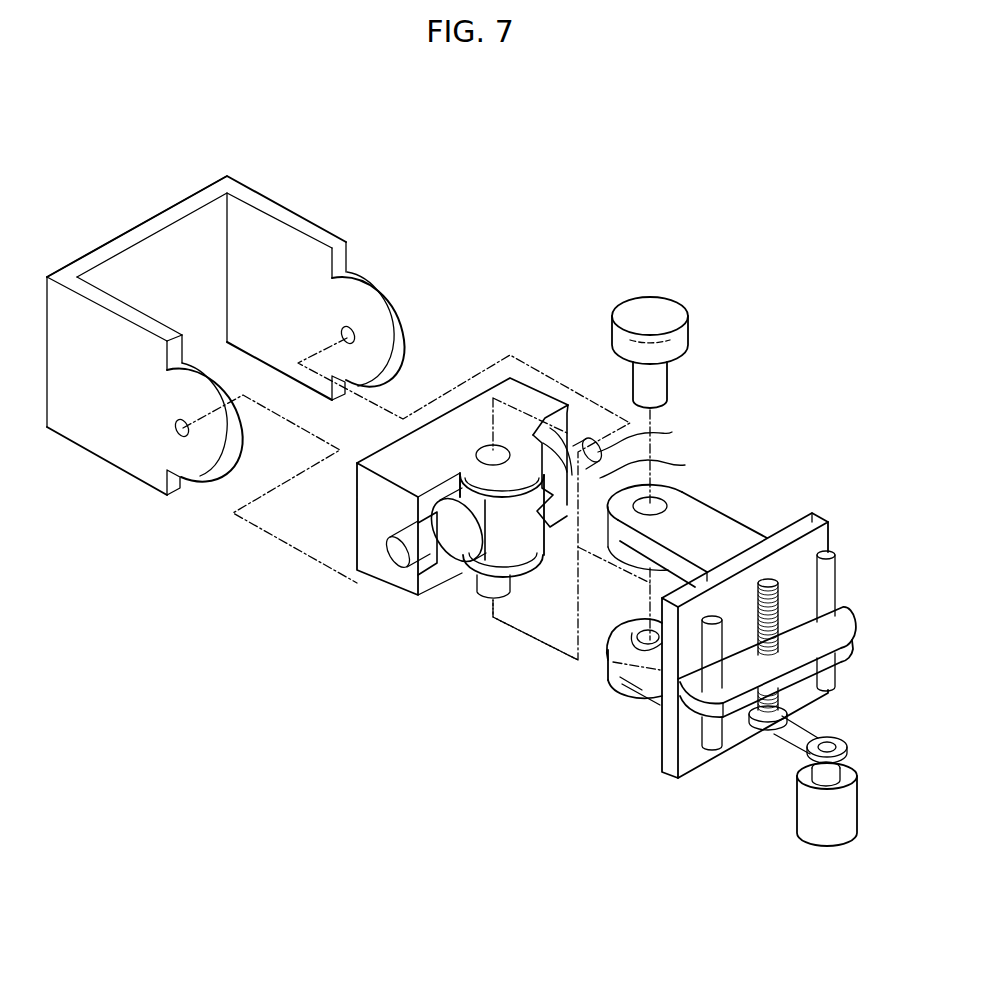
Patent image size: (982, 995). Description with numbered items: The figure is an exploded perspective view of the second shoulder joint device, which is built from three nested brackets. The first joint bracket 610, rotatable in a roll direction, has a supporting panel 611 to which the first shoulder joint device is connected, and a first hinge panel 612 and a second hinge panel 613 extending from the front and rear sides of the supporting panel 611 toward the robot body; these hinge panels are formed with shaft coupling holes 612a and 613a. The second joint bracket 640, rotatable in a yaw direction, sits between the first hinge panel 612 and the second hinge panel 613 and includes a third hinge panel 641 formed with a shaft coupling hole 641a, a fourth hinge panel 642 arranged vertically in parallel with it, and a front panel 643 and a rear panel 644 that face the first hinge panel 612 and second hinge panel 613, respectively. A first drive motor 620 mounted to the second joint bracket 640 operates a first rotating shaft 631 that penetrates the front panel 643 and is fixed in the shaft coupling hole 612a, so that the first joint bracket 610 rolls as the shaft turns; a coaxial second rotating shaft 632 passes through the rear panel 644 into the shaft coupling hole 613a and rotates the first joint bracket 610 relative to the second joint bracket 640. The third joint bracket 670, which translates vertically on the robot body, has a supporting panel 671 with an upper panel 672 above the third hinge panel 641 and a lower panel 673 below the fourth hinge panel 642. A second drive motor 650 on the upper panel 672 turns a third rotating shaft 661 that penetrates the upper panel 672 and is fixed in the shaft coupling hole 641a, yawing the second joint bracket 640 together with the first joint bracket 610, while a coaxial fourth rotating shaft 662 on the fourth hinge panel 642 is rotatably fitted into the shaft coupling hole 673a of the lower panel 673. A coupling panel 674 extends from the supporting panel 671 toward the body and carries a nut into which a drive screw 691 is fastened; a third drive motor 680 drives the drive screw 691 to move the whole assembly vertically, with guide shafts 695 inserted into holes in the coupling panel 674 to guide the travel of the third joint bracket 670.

The first joint bracket 610 is at (128, 195).
The supporting panel 611 is at (100, 253).
The first hinge panel 612 is at (110, 440).
The shaft coupling hole 612a is at (176, 429).
The second hinge panel 613 is at (360, 284).
The shaft coupling hole 613a is at (351, 342).
The first drive motor 620 is at (452, 576).
The first rotating shaft 631 is at (394, 586).
The second rotating shaft 632 is at (652, 435).
The second joint bracket 640 is at (529, 378).
The third hinge panel 641 is at (536, 430).
The shaft coupling hole 641a is at (488, 445).
The fourth hinge panel 642 is at (468, 582).
The front panel 643 is at (412, 592).
The rear panel 644 is at (652, 464).
The second drive motor 650 is at (652, 302).
The third rotating shaft 661 is at (666, 381).
The fourth rotating shaft 662 is at (508, 614).
The third joint bracket 670 is at (806, 500).
The supporting panel 671 is at (826, 539).
The upper panel 672 is at (722, 515).
The lower panel 673 is at (638, 703).
The shaft coupling hole 673a is at (624, 652).
The coupling panel 674 is at (849, 618).
The third drive motor 680 is at (800, 822).
The drive screw 691 is at (790, 699).
The guide shafts 695 is at (834, 578).